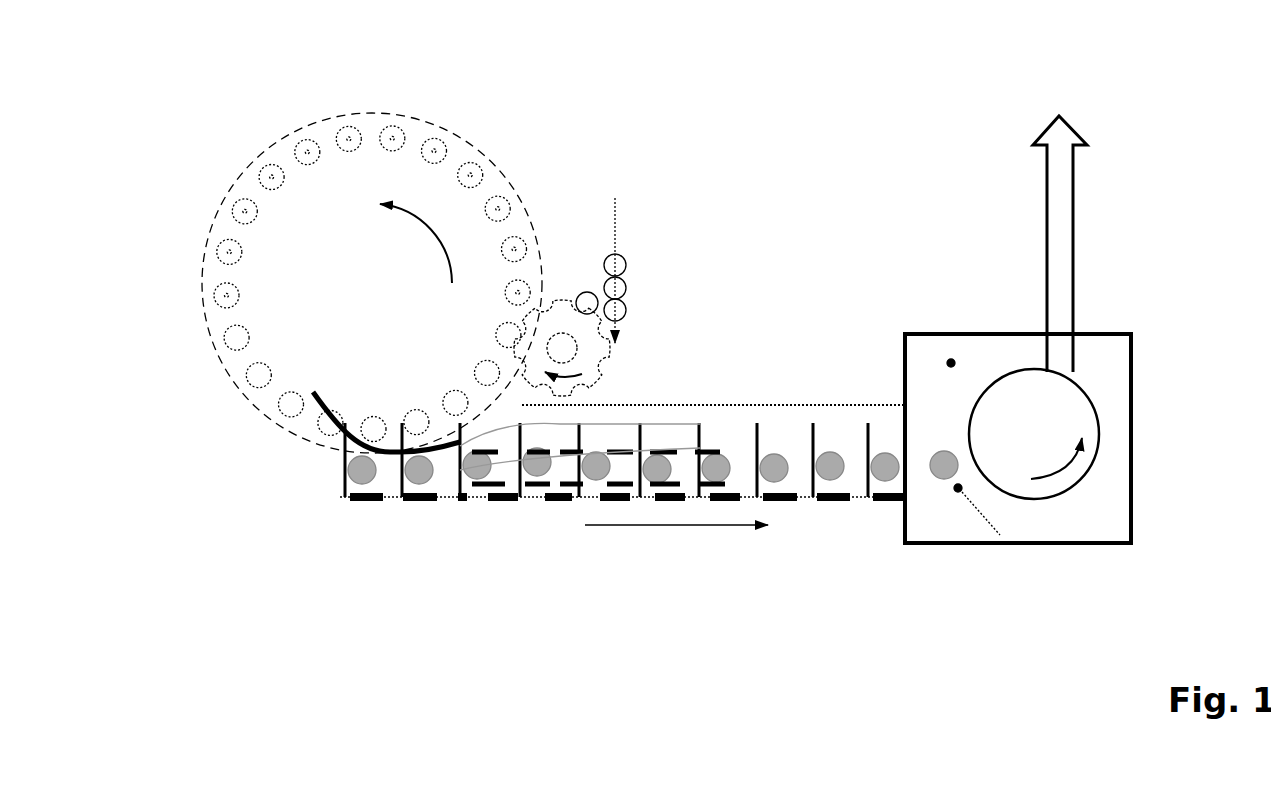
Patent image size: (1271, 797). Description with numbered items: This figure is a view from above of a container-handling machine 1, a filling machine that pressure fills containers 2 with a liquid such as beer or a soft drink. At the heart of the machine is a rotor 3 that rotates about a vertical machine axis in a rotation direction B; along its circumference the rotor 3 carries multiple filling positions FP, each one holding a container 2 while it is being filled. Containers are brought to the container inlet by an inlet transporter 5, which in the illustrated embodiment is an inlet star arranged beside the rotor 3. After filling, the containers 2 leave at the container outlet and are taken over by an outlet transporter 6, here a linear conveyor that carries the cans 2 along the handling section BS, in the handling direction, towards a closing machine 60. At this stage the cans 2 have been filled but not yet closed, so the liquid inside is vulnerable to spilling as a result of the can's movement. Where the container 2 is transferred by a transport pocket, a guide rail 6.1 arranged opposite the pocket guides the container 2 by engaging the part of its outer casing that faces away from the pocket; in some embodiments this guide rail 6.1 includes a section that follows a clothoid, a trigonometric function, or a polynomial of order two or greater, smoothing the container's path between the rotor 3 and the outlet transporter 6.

The container-handling machine 1 is at (167, 112).
The container 2 is at (587, 294).
The rotor 3 is at (458, 138).
The inlet transporter 5 is at (625, 370).
The outlet transporter 6 is at (467, 506).
The guide rail 6.1 is at (337, 398).
The closing machine 60 is at (950, 362).
The filling position FP is at (217, 248).
The rotation direction B is at (416, 243).
The handling section BS is at (676, 366).